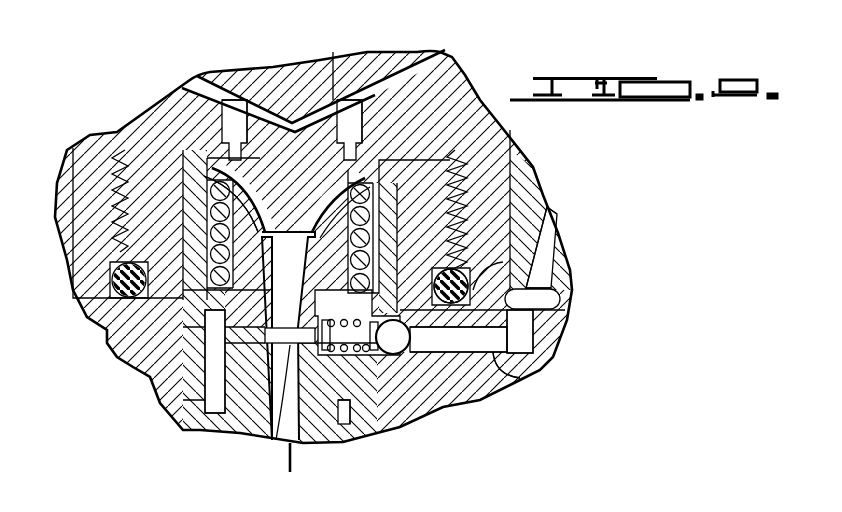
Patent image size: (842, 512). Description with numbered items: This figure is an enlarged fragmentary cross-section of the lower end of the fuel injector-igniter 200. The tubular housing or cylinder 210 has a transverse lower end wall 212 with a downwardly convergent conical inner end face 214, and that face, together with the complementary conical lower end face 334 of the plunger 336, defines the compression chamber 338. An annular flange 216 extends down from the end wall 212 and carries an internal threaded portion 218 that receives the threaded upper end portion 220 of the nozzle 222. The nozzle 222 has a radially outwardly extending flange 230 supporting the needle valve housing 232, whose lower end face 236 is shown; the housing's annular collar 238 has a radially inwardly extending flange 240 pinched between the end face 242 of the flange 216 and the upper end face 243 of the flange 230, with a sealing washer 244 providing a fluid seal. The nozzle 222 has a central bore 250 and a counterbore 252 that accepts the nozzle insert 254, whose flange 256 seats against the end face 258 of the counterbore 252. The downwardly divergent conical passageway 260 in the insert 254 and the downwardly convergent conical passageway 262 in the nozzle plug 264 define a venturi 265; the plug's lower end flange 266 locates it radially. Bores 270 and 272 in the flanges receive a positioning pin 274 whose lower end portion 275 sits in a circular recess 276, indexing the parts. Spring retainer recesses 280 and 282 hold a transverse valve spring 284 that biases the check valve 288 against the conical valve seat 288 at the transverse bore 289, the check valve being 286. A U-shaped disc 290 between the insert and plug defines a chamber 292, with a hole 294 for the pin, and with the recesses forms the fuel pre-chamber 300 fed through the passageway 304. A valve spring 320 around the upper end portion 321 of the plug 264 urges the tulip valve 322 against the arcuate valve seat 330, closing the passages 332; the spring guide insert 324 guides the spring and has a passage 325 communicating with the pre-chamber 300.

The fuel injector-igniter 200 is at (568, 175).
The tubular housing or cylinder 210 is at (67, 177).
The transverse lower end wall 212 is at (457, 75).
The conical inner end face 214 is at (430, 55).
The annular flange 216 is at (500, 204).
The internal threaded portion 218 is at (508, 136).
The threaded upper end portion 220 is at (375, 160).
The nozzle 222 is at (570, 338).
The radially outwardly extending flange 230 is at (543, 353).
The needle valve housing 232 is at (575, 289).
The lower end face 236 is at (567, 316).
The annular collar 238 is at (523, 160).
The radially inwardly extending flange 240 is at (532, 299).
The end face 242 is at (545, 260).
The upper end face 243 is at (490, 300).
The sealing washer 244 is at (440, 268).
The central bore 250 is at (310, 446).
The counterbore 252 is at (390, 222).
The nozzle insert 254 is at (240, 438).
The flange 256 is at (440, 407).
The end face 258 is at (370, 438).
The downwardly divergent conical passageway 260 is at (295, 485).
The downwardly convergent conical passageway 262 is at (300, 282).
The nozzle plug 264 is at (180, 307).
The venturi 265 is at (276, 440).
The lower end flange 266 is at (145, 330).
The bore 270 is at (192, 391).
The bore 272 is at (227, 320).
The positioning pin 274 is at (203, 370).
The lower end portion 275 is at (200, 430).
The circular recess 276 is at (190, 427).
The spring retainer recess 280 is at (347, 355).
The spring retainer recess 282 is at (431, 286).
The valve spring 284 is at (337, 358).
The check valve 286 is at (418, 338).
The conical valve seat 288 is at (413, 358).
The transverse bore 289 is at (513, 380).
The U-shaped disc 290 is at (236, 350).
The chamber 292 is at (290, 335).
The hole 294 is at (197, 335).
The fuel pre-chamber 300 is at (350, 336).
The upward extending passageway 304 is at (550, 262).
The valve spring 320 is at (207, 207).
The upper end portion 321 is at (240, 222).
The tulip valve 322 is at (256, 190).
The spring guide insert 324 is at (207, 257).
The groove or passage 325 is at (367, 173).
The valve seat 330 is at (256, 242).
The downwardly extending passages 332 is at (363, 104).
The conical lower end face 334 is at (376, 77).
The plunger 336 is at (298, 66).
The compression chamber 338 is at (340, 65).